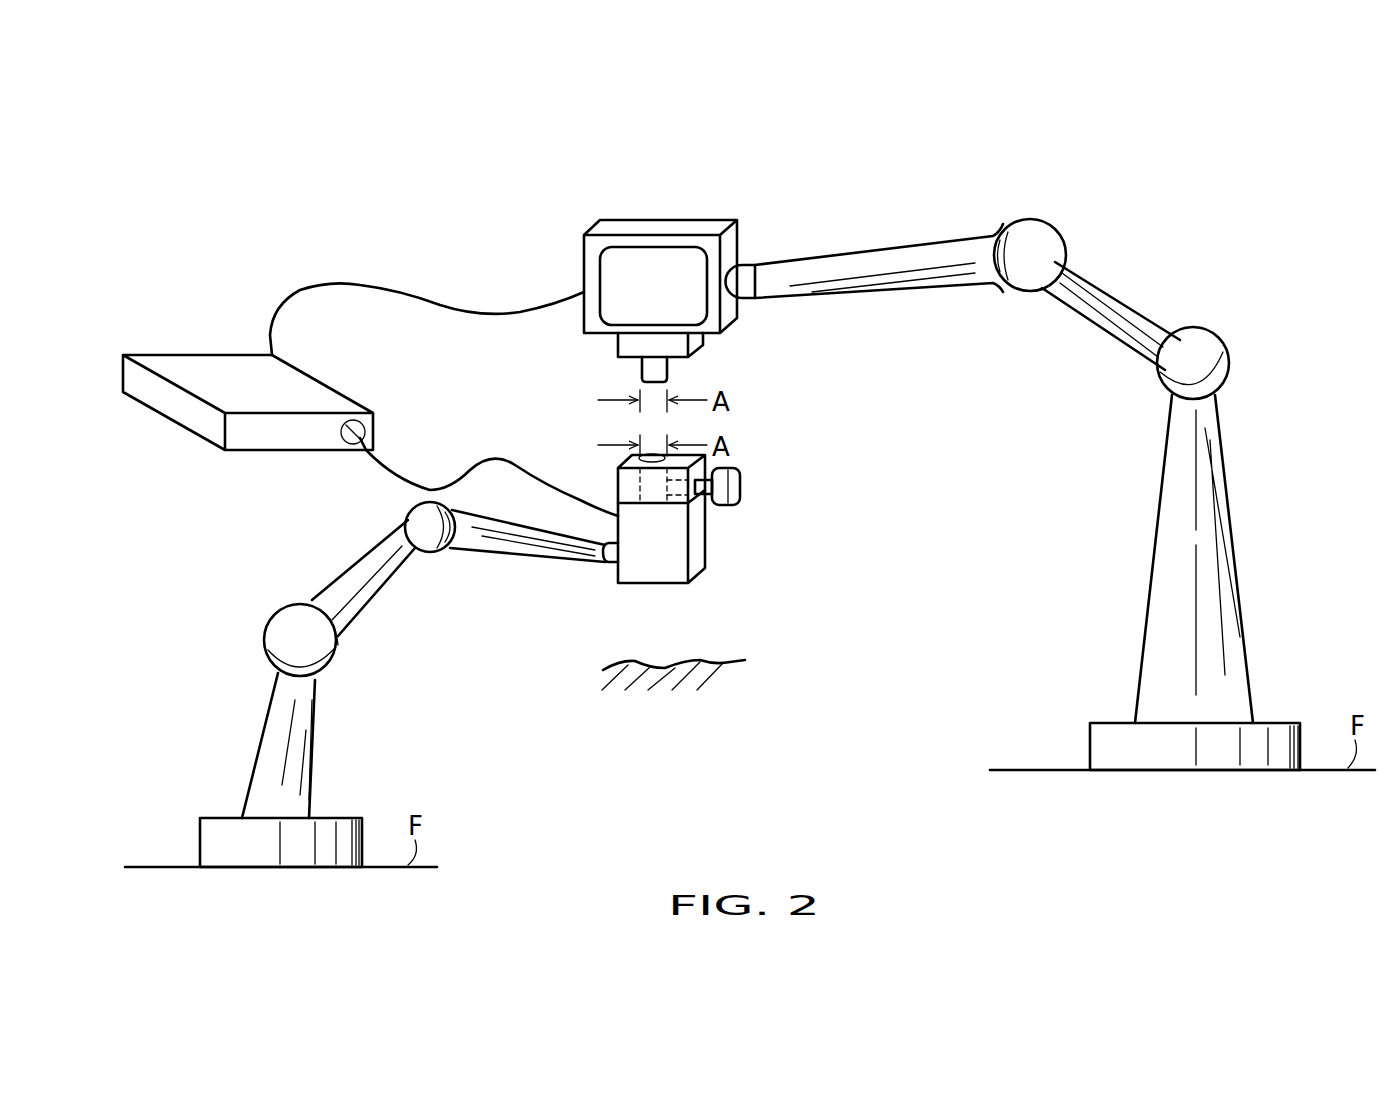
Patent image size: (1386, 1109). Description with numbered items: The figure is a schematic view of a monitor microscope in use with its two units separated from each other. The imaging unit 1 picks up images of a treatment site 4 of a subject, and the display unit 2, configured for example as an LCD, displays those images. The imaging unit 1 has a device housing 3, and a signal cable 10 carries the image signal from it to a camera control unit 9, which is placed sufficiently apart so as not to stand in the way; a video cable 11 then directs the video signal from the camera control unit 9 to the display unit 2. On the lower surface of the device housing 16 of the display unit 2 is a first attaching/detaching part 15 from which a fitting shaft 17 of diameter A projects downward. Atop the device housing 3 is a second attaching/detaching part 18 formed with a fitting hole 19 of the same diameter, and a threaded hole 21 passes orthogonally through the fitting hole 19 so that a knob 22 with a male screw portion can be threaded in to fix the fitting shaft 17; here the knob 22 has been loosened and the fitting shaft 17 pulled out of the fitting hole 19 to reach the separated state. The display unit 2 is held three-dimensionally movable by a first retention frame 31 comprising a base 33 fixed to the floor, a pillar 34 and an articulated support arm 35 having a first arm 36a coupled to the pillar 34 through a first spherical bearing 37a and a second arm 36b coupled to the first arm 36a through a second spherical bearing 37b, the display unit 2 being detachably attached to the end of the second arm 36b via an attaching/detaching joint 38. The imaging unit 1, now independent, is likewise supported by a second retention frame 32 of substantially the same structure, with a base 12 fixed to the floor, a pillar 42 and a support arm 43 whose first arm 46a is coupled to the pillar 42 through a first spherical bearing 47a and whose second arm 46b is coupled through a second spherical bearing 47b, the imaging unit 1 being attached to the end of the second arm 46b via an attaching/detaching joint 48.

The imaging unit 1 is at (668, 537).
The display unit 2 is at (663, 268).
The device housing 3 is at (705, 545).
The treatment site 4 is at (725, 662).
The camera control unit 9 is at (140, 398).
The signal cable 10 is at (437, 487).
The video cable 11 is at (417, 297).
The base 12 is at (210, 845).
The first attaching/detaching part 15 is at (700, 350).
The device housing 16 is at (688, 220).
The fitting shaft 17 is at (642, 370).
The second attaching/detaching part 18 is at (618, 483).
The fitting hole 19 is at (650, 503).
The threaded hole 21 is at (700, 500).
The knob 22 is at (740, 487).
The first retention frame 31 is at (1244, 270).
The second retention frame 32 is at (235, 675).
The base 33 is at (1288, 720).
The pillar 34 is at (1230, 590).
The support arm 35 is at (1028, 252).
The first arm 36a is at (1115, 300).
The second arm 36b is at (918, 255).
The first spherical bearing 37a is at (1225, 368).
The second spherical bearing 37b is at (1033, 240).
The attaching/detaching joint 38 is at (752, 268).
The pillar 42 is at (265, 748).
The support arm 43 is at (613, 605).
The first arm 46a is at (355, 582).
The second arm 46b is at (535, 556).
The first spherical bearing 47a is at (290, 615).
The second spherical bearing 47b is at (423, 550).
The attaching/detaching joint 48 is at (609, 562).